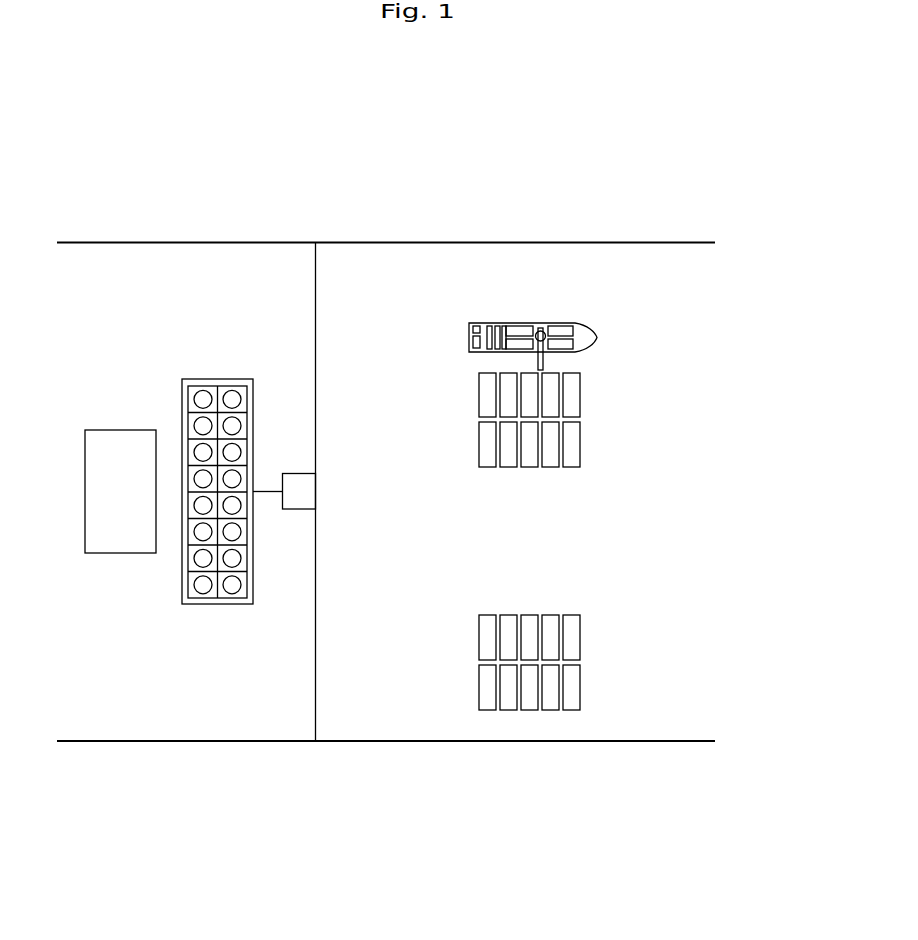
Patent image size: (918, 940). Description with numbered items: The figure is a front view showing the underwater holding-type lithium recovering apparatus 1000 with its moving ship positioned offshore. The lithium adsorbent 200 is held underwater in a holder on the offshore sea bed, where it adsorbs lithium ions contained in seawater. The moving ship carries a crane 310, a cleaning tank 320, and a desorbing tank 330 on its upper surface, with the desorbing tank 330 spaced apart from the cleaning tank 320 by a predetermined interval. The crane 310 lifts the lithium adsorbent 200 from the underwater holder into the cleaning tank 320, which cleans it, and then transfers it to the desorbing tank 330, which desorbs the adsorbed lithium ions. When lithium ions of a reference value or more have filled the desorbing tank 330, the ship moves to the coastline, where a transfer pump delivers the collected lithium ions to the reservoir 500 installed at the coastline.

The underwater holding-type lithium recovering apparatus 1000 is at (693, 141).
The lithium adsorbent 200 is at (576, 690).
The crane 310 is at (540, 326).
The cleaning tank 320 is at (566, 326).
The desorbing tank 330 is at (518, 325).
The reservoir 500 is at (300, 473).